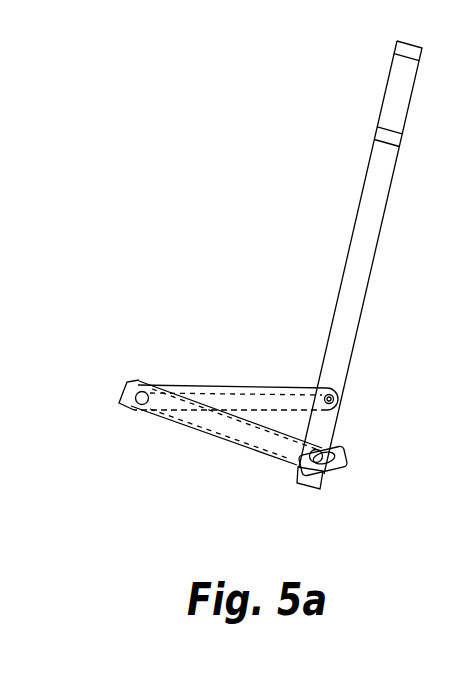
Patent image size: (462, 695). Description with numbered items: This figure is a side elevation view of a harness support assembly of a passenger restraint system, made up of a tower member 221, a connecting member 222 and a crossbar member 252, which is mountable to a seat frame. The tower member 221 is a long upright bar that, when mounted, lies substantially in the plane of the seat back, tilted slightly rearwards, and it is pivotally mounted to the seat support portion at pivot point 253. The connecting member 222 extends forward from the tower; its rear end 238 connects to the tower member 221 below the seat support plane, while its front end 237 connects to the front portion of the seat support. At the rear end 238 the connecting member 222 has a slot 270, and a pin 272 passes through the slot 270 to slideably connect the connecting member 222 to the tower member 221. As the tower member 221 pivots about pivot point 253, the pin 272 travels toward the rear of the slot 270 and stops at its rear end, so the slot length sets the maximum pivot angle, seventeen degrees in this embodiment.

The tower member 221 is at (373, 197).
The connecting member 222 is at (243, 425).
The front end 237 is at (122, 397).
The rear end 238 is at (344, 452).
The crossbar member 252 is at (205, 392).
The pivot point 253 is at (345, 398).
The slot 270 is at (328, 472).
The pin 272 is at (298, 460).